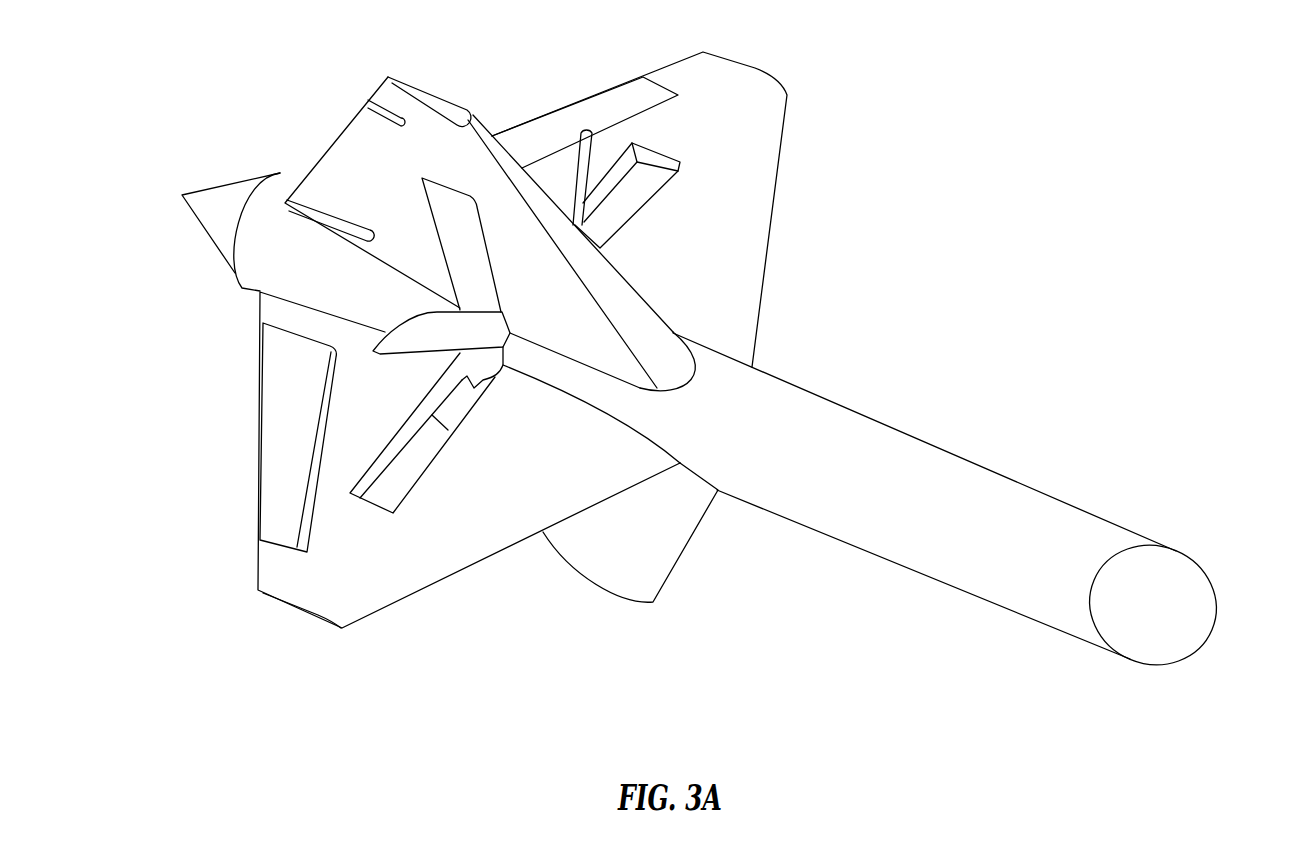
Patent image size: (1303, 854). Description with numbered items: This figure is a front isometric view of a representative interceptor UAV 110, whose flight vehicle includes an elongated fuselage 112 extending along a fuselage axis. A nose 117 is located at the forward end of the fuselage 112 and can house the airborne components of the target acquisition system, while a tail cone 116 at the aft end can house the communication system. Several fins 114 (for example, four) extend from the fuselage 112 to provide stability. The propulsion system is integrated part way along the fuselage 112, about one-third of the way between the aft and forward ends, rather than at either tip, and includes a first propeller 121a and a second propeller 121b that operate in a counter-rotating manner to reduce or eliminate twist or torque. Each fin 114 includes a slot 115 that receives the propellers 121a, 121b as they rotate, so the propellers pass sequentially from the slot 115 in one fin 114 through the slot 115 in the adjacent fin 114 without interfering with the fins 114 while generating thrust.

The interceptor UAV 110 is at (930, 285).
The fuselage 112 is at (933, 583).
The fin 114 is at (773, 228).
The slot 115 is at (388, 478).
The tail cone 116 is at (197, 223).
The nose 117 is at (1192, 583).
The first propeller 121a is at (457, 333).
The second propeller 121b is at (577, 148).